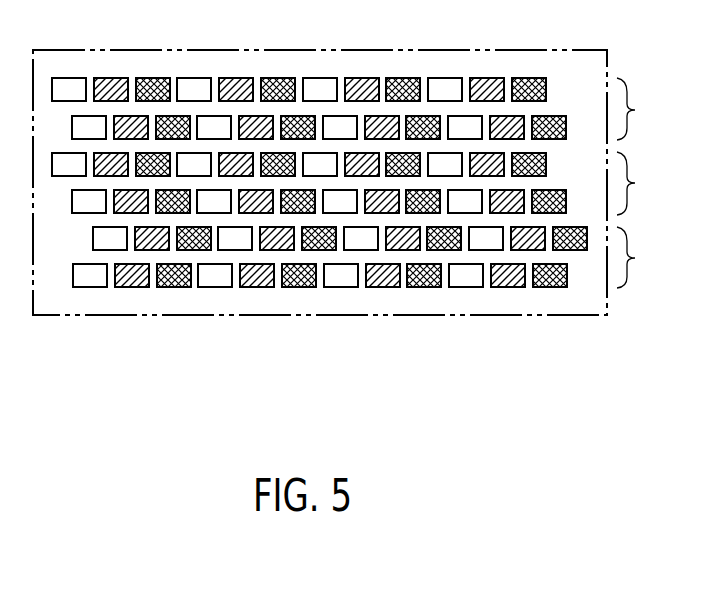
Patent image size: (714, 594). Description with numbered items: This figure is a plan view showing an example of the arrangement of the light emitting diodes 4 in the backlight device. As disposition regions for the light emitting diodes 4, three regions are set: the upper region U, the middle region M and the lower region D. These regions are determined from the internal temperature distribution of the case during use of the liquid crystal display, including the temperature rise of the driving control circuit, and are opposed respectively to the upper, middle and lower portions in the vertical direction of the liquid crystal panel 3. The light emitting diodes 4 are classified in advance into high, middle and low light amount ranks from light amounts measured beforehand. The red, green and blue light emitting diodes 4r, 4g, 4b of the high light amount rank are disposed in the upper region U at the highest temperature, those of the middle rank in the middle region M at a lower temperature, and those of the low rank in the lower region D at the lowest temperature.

The liquid crystal panel 3 is at (495, 316).
The light emitting diodes 4 is at (549, 89).
The red light emitting diode 4r is at (444, 88).
The green light emitting diode 4g is at (486, 88).
The blue light emitting diode 4b is at (525, 88).
The upper region U is at (637, 109).
The middle region M is at (637, 183).
The lower region D is at (637, 257).